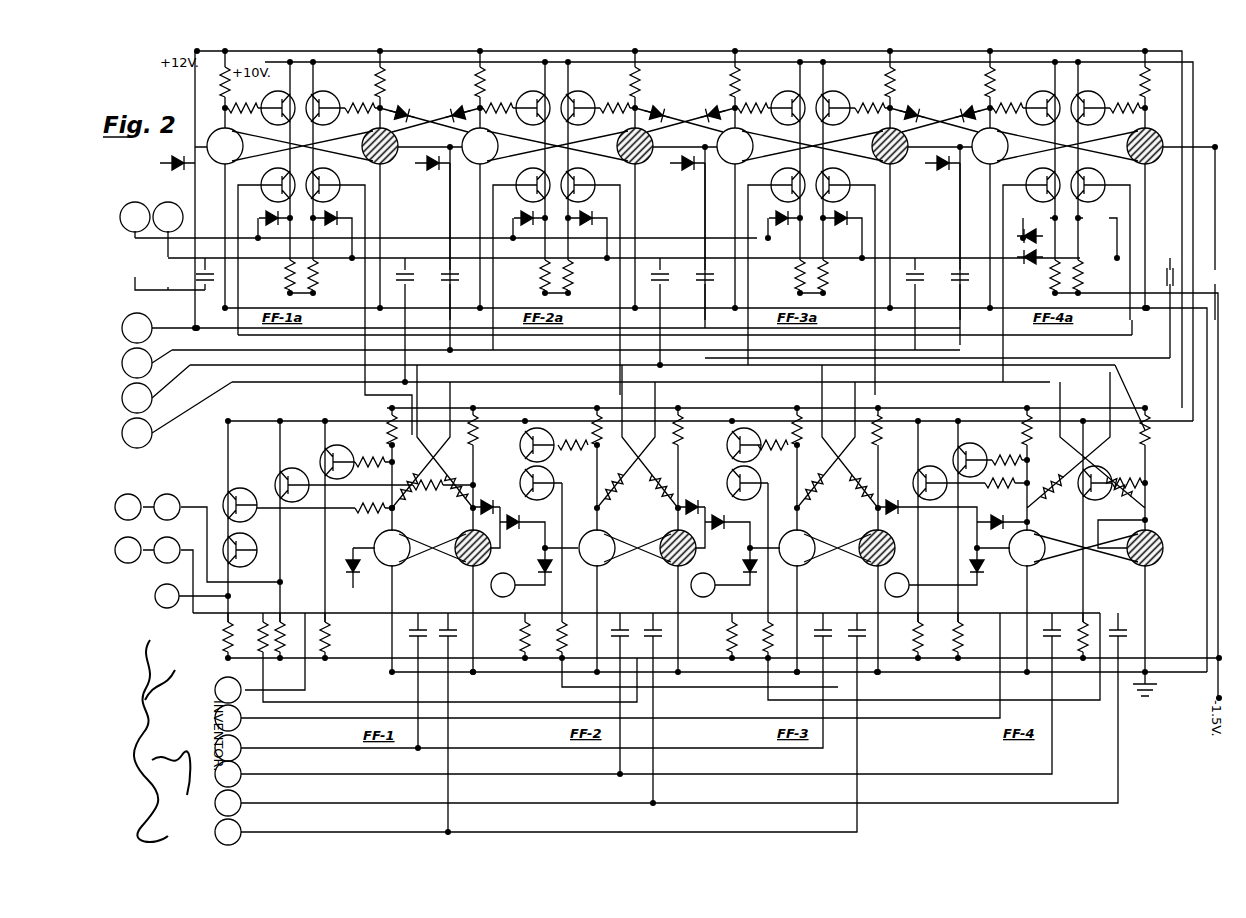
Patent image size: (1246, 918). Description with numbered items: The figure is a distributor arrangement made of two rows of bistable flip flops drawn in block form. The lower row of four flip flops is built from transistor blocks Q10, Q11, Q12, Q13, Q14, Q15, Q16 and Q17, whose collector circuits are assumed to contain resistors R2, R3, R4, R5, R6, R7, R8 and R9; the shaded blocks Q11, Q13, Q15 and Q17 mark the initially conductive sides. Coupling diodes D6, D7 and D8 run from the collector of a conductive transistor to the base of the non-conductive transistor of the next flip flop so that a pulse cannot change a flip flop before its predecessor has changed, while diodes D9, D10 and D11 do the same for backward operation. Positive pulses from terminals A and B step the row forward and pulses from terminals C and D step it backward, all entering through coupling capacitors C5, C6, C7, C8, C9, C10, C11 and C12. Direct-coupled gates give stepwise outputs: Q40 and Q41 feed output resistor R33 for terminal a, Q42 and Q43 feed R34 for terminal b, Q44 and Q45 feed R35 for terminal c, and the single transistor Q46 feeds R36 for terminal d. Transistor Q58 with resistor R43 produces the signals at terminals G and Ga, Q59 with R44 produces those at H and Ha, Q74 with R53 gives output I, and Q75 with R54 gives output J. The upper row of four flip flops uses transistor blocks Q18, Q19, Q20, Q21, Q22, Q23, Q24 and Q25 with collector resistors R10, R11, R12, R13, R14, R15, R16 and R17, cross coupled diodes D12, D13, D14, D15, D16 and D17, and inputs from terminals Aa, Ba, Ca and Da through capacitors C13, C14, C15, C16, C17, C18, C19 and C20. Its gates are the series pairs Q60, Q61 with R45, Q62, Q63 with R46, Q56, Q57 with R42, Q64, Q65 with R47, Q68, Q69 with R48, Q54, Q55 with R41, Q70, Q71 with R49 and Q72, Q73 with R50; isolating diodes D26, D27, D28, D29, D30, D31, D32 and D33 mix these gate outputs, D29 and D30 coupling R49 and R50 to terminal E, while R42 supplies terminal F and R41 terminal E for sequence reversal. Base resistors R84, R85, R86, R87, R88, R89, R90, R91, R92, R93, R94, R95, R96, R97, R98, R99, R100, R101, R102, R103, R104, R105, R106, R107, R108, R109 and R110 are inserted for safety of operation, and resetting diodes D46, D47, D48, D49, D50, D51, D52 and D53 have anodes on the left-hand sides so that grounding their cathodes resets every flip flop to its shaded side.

The collector circuit resistor R10 is at (214, 83).
The collector circuit resistor R11 is at (392, 82).
The collector circuit resistor R12 is at (470, 82).
The collector circuit resistor R13 is at (647, 82).
The collector circuit resistor R14 is at (722, 81).
The collector circuit resistor R15 is at (901, 82).
The collector circuit resistor R16 is at (973, 81).
The collector circuit resistor R17 is at (1157, 82).
The base resistor R84 is at (243, 115).
The base resistor R85 is at (360, 115).
The base resistor R86 is at (498, 101).
The base resistor R87 is at (615, 99).
The base resistor R88 is at (753, 99).
The base resistor R89 is at (868, 115).
The base resistor R90 is at (1008, 115).
The base resistor R91 is at (1124, 115).
The collector circuit resistor R45 is at (277, 275).
The collector circuit resistor R46 is at (326, 275).
The collector circuit resistor R42 is at (532, 275).
The collector circuit resistor R47 is at (581, 275).
The collector circuit resistor R48 is at (787, 275).
The collector circuit resistor R41 is at (836, 275).
The output resistor R49 is at (1036, 278).
The output resistor R50 is at (1092, 275).
The transistor Q18 is at (237, 146).
The transistor Q19 is at (366, 146).
The transistor Q20 is at (491, 146).
The transistor Q21 is at (620, 146).
The transistor Q22 is at (746, 146).
The transistor Q23 is at (875, 146).
The transistor Q24 is at (1001, 146).
The transistor Q25 is at (1130, 146).
The gate transistor Q61 is at (276, 114).
The gate transistor Q63 is at (323, 100).
The gate transistor Q60 is at (273, 180).
The gate transistor Q62 is at (333, 182).
The gate transistor Q57 is at (530, 97).
The gate transistor Q65 is at (578, 97).
The gate transistor Q56 is at (528, 179).
The gate transistor Q64 is at (588, 181).
The gate transistor Q69 is at (786, 95).
The gate transistor Q55 is at (833, 99).
The gate transistor Q68 is at (780, 179).
The PNP gate transistor Q54 is at (843, 179).
The gate transistor Q71 is at (1041, 97).
The gate transistor Q73 is at (1090, 97).
The gate transistor Q70 is at (1028, 184).
The gate transistor Q72 is at (1100, 182).
The resetting diode D46 is at (175, 173).
The resetting diode D47 is at (433, 173).
The resetting diode D48 is at (688, 173).
The resetting diode D49 is at (942, 173).
The isolating diode D26 is at (263, 212).
The diode D33 is at (339, 211).
The isolating diode D27 is at (517, 211).
The diode D32 is at (591, 211).
The isolating diode D28 is at (771, 210).
The diode D31 is at (849, 210).
The isolating diode D30 is at (1027, 227).
The isolating diode D29 is at (1026, 267).
The cross coupled diode D12 is at (405, 109).
The cross coupled diode D17 is at (456, 109).
The cross coupled diode D13 is at (660, 108).
The cross coupled diode D16 is at (712, 108).
The cross coupled diode D14 is at (912, 106).
The cross coupled diode D15 is at (964, 106).
The coupling capacitor C13 is at (204, 285).
The coupling capacitor C14 is at (398, 285).
The coupling capacitor C15 is at (440, 285).
The coupling capacitor C16 is at (657, 285).
The coupling capacitor C17 is at (713, 285).
The coupling capacitor C18 is at (910, 285).
The coupling capacitor C19 is at (968, 285).
The coupling capacitor C20 is at (1164, 272).
The collector circuit resistor R2 is at (382, 430).
The collector circuit resistor R3 is at (479, 433).
The collector circuit resistor R4 is at (585, 430).
The collector circuit resistor R5 is at (668, 434).
The collector circuit resistor R6 is at (787, 430).
The collector circuit resistor R7 is at (887, 430).
The collector circuit resistor R8 is at (1018, 430).
The collector circuit resistor R9 is at (1156, 430).
The base resistor R94 is at (369, 469).
The base resistor R92 is at (368, 500).
The base resistor R95 is at (428, 493).
The base resistor R97 is at (407, 475).
The base resistor R96 is at (448, 479).
The base resistor R98 is at (573, 453).
The base resistor R101 is at (609, 473).
The base resistor R100 is at (656, 488).
The base resistor R102 is at (773, 452).
The base resistor R105 is at (811, 473).
The base resistor R104 is at (856, 485).
The base resistor R107 is at (1005, 467).
The base resistor R106 is at (1001, 490).
The base resistor R109 is at (1050, 473).
The base resistor R108 is at (1119, 470).
The base resistor R110 is at (1127, 491).
The output resistor R33 is at (215, 637).
The base resistor R93 is at (261, 637).
The resistor R43 is at (291, 637).
The collector circuit resistor R53 is at (339, 637).
The output resistor R34 is at (513, 637).
The base resistor R99 is at (575, 637).
The output resistor R35 is at (719, 637).
The base resistor R103 is at (779, 636).
The output resistor R36 is at (907, 637).
The collector circuit resistor R44 is at (973, 637).
The collector circuit resistor R54 is at (1094, 626).
The PNP gate transistor Q40 is at (240, 496).
The PNP transistor Q41 is at (248, 545).
The transistor Q58 is at (278, 477).
The transistor Q74 is at (323, 457).
The gate transistor Q42 is at (522, 448).
The gate transistor Q43 is at (522, 483).
The gate transistor Q44 is at (729, 445).
The gate transistor Q45 is at (729, 479).
The transistor Q46 is at (917, 479).
The PNP transistor Q59 is at (956, 459).
The transistor Q75 is at (1081, 486).
The transistor Q10 is at (397, 541).
The transistor Q11 is at (464, 541).
The transistor Q12 is at (591, 557).
The transistor Q13 is at (677, 557).
The transistor Q14 is at (793, 557).
The transistor Q15 is at (876, 557).
The transistor Q16 is at (1017, 552).
The transistor Q17 is at (1158, 548).
The resetting diode D50 is at (345, 557).
The resetting diode D51 is at (546, 578).
The resetting diode D52 is at (751, 578).
The resetting diode D53 is at (979, 577).
The coupling diode D6 is at (488, 500).
The coupling diode D11 is at (513, 532).
The coupling diode D7 is at (692, 497).
The coupling diode D10 is at (718, 532).
The coupling diode D8 is at (892, 499).
The coupling diode D9 is at (996, 531).
The coupling capacitor C5 is at (412, 642).
The coupling capacitor C7 is at (453, 642).
The coupling capacitor C8 is at (614, 642).
The coupling capacitor C9 is at (658, 642).
The coupling capacitor C6 is at (818, 642).
The coupling capacitor C10 is at (863, 642).
The coupling capacitor C11 is at (1046, 642).
The coupling capacitor C12 is at (1126, 641).
The output terminal F is at (135, 217).
The output terminal E is at (168, 217).
The input terminal Aa is at (137, 328).
The input terminal Ba is at (137, 363).
The input terminal Ca is at (137, 398).
The input terminal Da is at (137, 433).
The output terminal Ga is at (128, 507).
The output terminal G is at (167, 507).
The output terminal Ha is at (128, 550).
The output terminal H is at (167, 550).
The output terminal a is at (167, 596).
The output terminal b is at (503, 585).
The output terminal c is at (703, 585).
The output terminal d is at (897, 585).
The output terminal I is at (228, 690).
The output terminal J is at (228, 718).
The input terminal A is at (228, 748).
The input terminal B is at (228, 774).
The input terminal C is at (228, 803).
The input terminal D is at (228, 832).